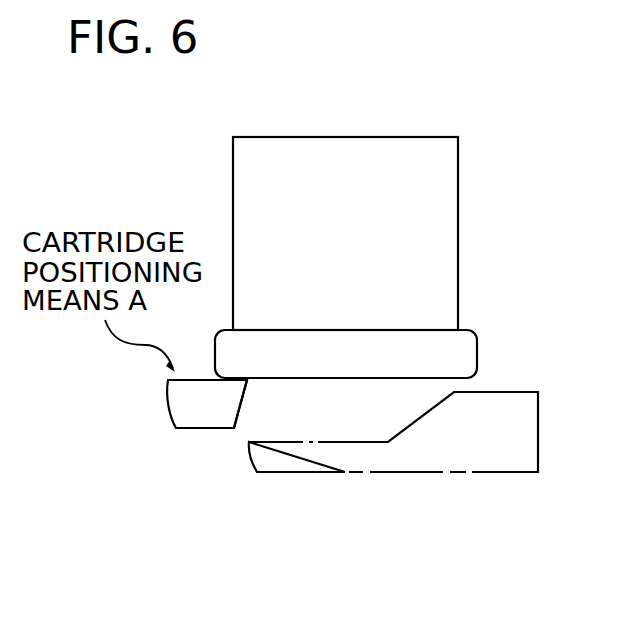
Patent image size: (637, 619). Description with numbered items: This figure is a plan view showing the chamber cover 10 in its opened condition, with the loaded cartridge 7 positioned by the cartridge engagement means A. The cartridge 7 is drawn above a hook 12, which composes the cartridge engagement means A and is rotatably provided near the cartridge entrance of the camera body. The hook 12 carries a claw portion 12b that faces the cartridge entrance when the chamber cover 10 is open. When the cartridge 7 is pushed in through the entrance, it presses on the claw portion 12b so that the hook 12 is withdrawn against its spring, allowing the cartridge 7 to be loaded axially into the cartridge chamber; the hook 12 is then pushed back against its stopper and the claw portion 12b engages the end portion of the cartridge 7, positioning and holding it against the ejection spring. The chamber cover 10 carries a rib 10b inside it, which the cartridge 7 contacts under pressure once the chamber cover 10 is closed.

The cartridge 7 is at (260, 198).
The chamber cover 10 is at (433, 474).
The rib 10b is at (517, 392).
The hook 12 is at (183, 434).
The claw portion 12b is at (240, 415).